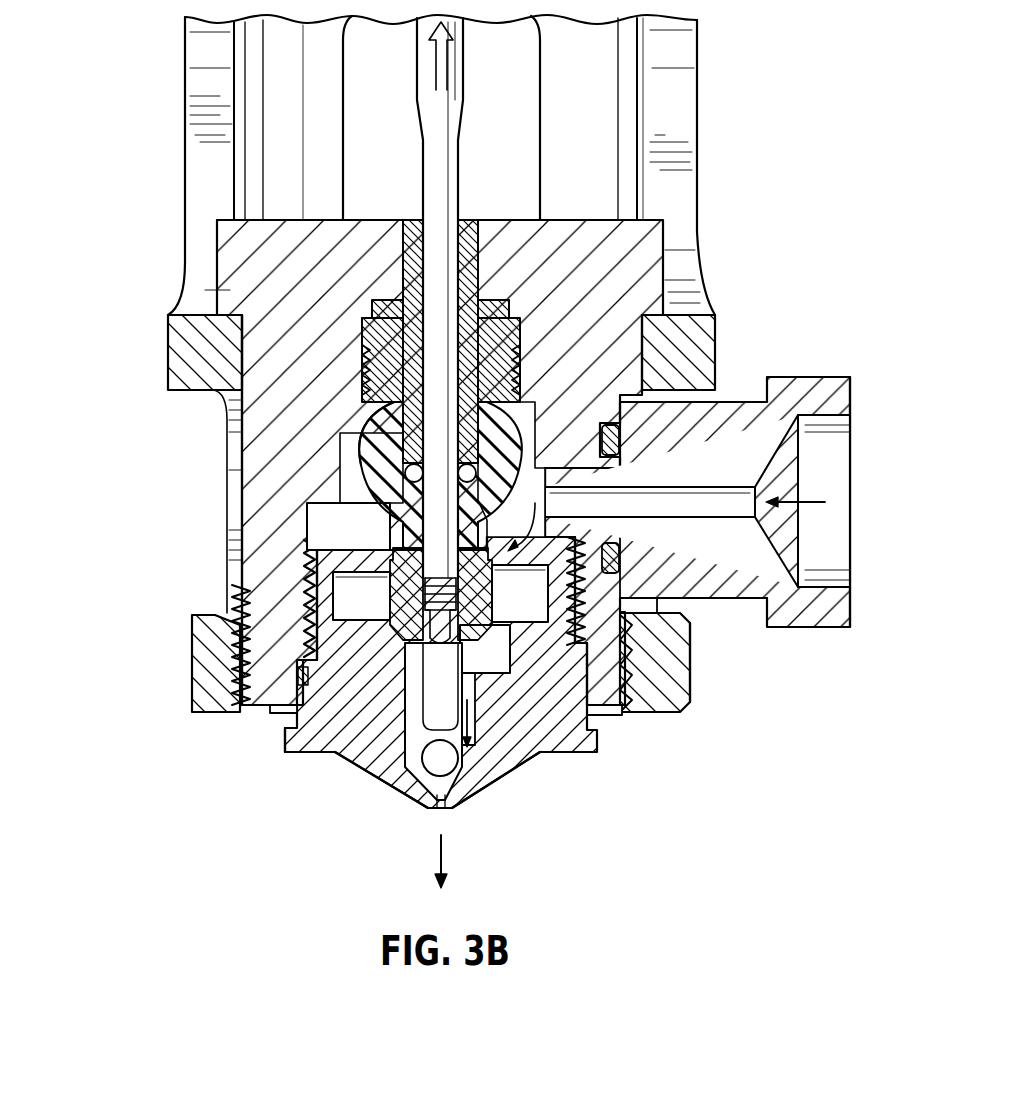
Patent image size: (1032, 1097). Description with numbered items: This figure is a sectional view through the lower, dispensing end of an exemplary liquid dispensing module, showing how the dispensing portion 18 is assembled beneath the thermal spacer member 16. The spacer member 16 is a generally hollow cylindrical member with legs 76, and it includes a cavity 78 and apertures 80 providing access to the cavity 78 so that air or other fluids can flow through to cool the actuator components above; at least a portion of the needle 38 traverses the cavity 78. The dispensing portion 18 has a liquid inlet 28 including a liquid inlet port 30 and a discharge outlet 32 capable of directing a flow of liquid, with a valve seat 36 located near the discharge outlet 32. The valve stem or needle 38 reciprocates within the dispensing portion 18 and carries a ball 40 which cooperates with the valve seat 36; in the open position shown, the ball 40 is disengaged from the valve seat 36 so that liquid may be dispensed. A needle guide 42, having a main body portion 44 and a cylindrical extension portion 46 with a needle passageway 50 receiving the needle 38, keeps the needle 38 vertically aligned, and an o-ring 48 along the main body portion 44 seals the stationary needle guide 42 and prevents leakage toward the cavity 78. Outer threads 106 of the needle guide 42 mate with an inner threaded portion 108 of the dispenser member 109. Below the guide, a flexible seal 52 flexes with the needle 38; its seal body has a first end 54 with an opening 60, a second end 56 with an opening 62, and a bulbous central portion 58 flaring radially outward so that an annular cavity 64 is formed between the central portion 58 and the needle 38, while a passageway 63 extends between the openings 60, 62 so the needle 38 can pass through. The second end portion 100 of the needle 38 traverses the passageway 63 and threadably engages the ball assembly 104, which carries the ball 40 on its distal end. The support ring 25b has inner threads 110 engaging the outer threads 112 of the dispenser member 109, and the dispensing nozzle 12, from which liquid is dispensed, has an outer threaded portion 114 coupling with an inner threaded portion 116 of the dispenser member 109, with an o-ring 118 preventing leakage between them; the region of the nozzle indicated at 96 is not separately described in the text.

The dispensing nozzle 12 is at (350, 760).
The spacer member 16 is at (183, 150).
The dispensing portion 18 is at (193, 511).
The support ring 25b is at (693, 646).
The liquid inlet 28 is at (715, 500).
The liquid inlet port 30 is at (805, 380).
The discharge outlet 32 is at (440, 812).
The valve seat 36 is at (433, 790).
The needle 38 is at (463, 68).
The ball 40 is at (447, 762).
The needle guide 42 is at (400, 279).
The main body portion 44 is at (490, 340).
The cylindrical extension portion 46 is at (490, 240).
The o-ring 48 is at (492, 300).
The needle passageway 50 is at (432, 243).
The flexible seal 52 is at (360, 477).
The first end 54 is at (480, 374).
The second end 56 is at (400, 540).
The central portion 58 is at (500, 440).
The first opening 60 is at (360, 322).
The second opening 62 is at (426, 589).
The passageway 63 is at (362, 418).
The annular cavity 64 is at (342, 438).
The legs 76 is at (228, 549).
The cavity 78 is at (441, 118).
The apertures 80 is at (203, 48).
The nozzle assembly 96 is at (293, 774).
The second end portion 100 is at (481, 653).
The ball assembly 104 is at (440, 705).
The outer threads 106 is at (352, 350).
The inner threaded portion 108 is at (352, 379).
The dispenser member 109 is at (220, 232).
The inner threads 110 is at (670, 684).
The outer threads 112 is at (625, 717).
The outer threaded portion 114 is at (300, 620).
The inner threaded portion 116 is at (305, 586).
The o-ring 118 is at (300, 720).